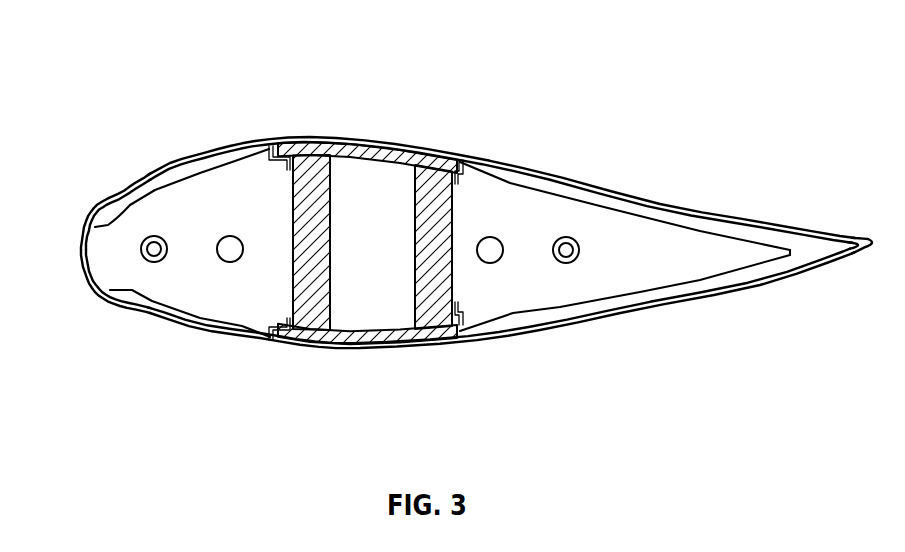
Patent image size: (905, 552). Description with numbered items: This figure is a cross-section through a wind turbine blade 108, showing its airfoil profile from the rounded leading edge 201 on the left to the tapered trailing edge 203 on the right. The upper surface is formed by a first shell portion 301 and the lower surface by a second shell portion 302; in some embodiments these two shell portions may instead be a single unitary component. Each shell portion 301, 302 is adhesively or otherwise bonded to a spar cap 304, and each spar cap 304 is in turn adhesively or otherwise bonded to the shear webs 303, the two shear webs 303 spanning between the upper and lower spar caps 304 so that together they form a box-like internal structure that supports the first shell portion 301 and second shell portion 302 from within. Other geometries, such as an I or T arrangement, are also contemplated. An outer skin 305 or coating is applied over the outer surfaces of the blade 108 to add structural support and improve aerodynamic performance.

The turbine blade 108 is at (146, 72).
The leading edge 201 is at (125, 190).
The trailing edge 203 is at (795, 230).
The first shell portion 301 is at (222, 160).
The second shell portion 302 is at (195, 322).
The shear web 303 is at (318, 168).
The spar cap 304 is at (362, 150).
The outer skin 305 is at (112, 304).